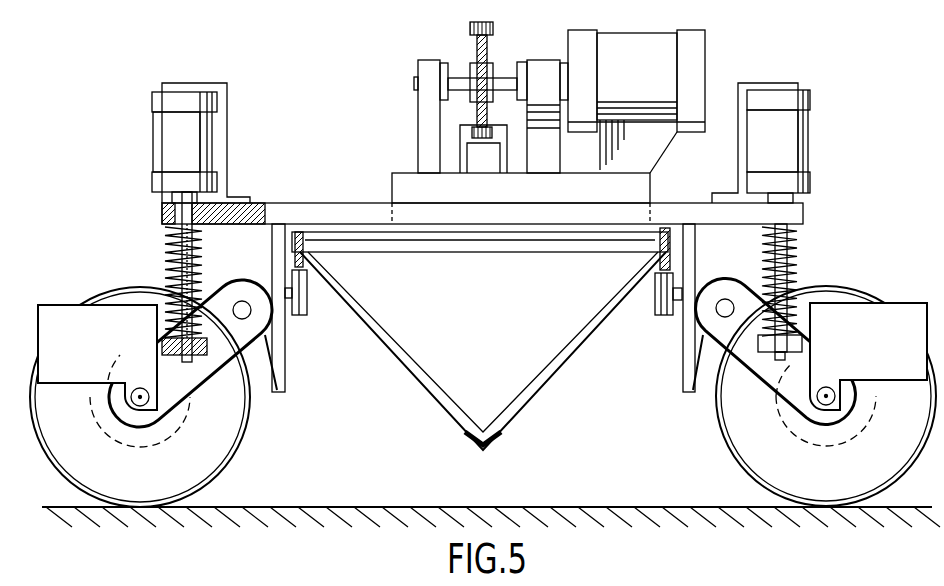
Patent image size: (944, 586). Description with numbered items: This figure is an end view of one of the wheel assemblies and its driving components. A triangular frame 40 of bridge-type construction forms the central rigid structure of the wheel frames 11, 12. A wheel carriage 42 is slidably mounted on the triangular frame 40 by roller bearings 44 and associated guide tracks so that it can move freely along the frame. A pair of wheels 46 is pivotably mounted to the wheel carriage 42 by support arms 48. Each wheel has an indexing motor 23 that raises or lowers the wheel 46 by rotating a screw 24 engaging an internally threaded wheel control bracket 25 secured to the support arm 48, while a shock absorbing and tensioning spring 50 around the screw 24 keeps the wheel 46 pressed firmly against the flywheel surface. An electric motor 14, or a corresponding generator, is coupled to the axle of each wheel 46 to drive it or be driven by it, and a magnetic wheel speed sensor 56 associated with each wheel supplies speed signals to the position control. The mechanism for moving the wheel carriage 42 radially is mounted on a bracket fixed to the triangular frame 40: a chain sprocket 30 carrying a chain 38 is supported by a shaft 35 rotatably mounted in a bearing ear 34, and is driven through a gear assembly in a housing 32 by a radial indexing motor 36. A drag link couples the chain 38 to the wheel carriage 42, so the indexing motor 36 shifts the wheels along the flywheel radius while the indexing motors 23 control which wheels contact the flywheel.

The wheel frame 11 is at (480, 341).
The wheel frame 12 is at (480, 341).
The electric motor 14 is at (123, 467).
The indexing motor 23 is at (152, 122).
The screw 24 is at (202, 262).
The wheel control bracket 25 is at (482, 352).
The chain sprocket 30 is at (490, 43).
The gear housing 32 is at (543, 60).
The bearing ear 34 is at (428, 62).
The shaft 35 is at (415, 80).
The indexing motor 36 is at (628, 35).
The chain 38 is at (472, 28).
The triangular frame 40 is at (397, 418).
The wheel carriage 42 is at (795, 210).
The roller bearings 44 is at (305, 312).
The wheel 46 is at (237, 422).
The support arm 48 is at (767, 347).
The shock absorbing and tensioning spring 50 is at (167, 252).
The wheel speed sensor 56 is at (52, 305).